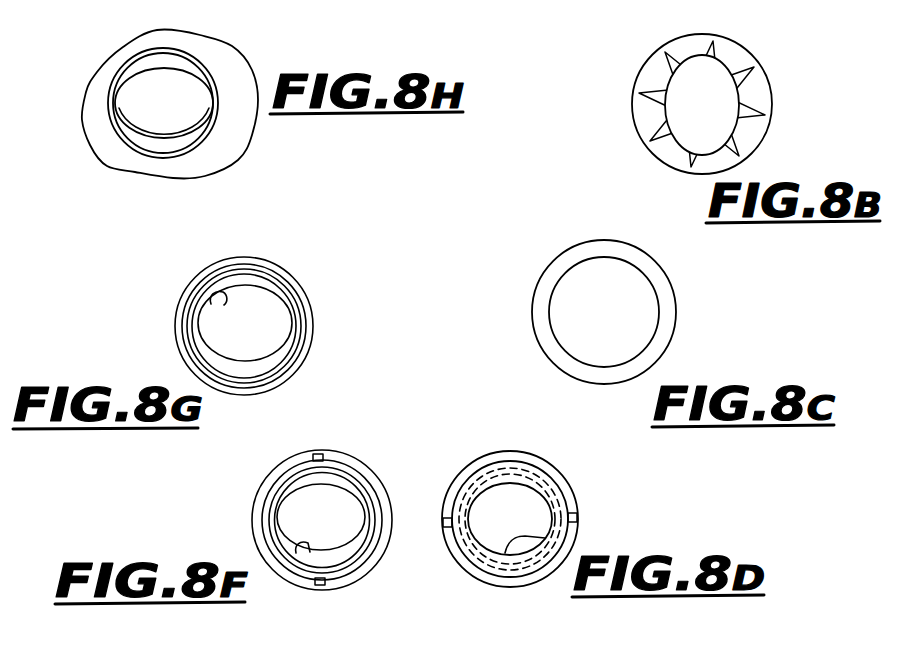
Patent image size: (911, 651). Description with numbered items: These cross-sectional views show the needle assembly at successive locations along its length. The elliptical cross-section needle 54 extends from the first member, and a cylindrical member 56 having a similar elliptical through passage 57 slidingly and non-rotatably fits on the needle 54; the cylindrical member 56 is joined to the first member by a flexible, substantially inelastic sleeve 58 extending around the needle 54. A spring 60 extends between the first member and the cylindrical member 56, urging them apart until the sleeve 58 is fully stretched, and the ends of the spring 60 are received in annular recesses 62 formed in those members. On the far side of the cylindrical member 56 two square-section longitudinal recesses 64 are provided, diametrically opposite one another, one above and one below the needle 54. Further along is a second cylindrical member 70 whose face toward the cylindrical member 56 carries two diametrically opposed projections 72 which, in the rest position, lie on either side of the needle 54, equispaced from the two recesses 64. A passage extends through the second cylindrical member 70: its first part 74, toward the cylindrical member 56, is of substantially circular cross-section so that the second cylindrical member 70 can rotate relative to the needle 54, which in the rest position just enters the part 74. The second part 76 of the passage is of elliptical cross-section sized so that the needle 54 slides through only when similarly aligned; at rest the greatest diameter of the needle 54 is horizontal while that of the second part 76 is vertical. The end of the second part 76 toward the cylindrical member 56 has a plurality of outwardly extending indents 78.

In FIG. 8H, the needle 54 is at (145, 76).
In FIG. 8G, the needle 54 is at (222, 292).
In FIG. 8F, the needle 54 is at (305, 550).
In FIG. 8D, the needle 54 is at (545, 538).
In FIG. 8G, the cylindrical member 56 is at (295, 285).
In FIG. 8F, the cylindrical member 56 is at (262, 497).
In FIG. 8G, the through passage 57 is at (250, 290).
In FIG. 8F, the through passage 57 is at (330, 484).
In FIG. 8H, the sleeve 58 is at (117, 177).
In FIG. 8H, the spring 60 is at (200, 67).
In FIG. 8G, the spring 60 is at (280, 322).
In FIG. 8G, the annular recesses 62 is at (207, 297).
In FIG. 8F, the longitudinal recesses 64 is at (323, 457).
In FIG. 8C, the second cylindrical member 70 is at (610, 241).
In FIG. 8D, the projections 72 is at (573, 517).
In FIG. 8C, the first part of the passage 74 is at (627, 297).
In FIG. 8D, the first part of the passage 74 is at (497, 470).
In FIG. 8B, the second part of the passage 76 is at (712, 80).
In FIG. 8B, the indents 78 is at (742, 116).